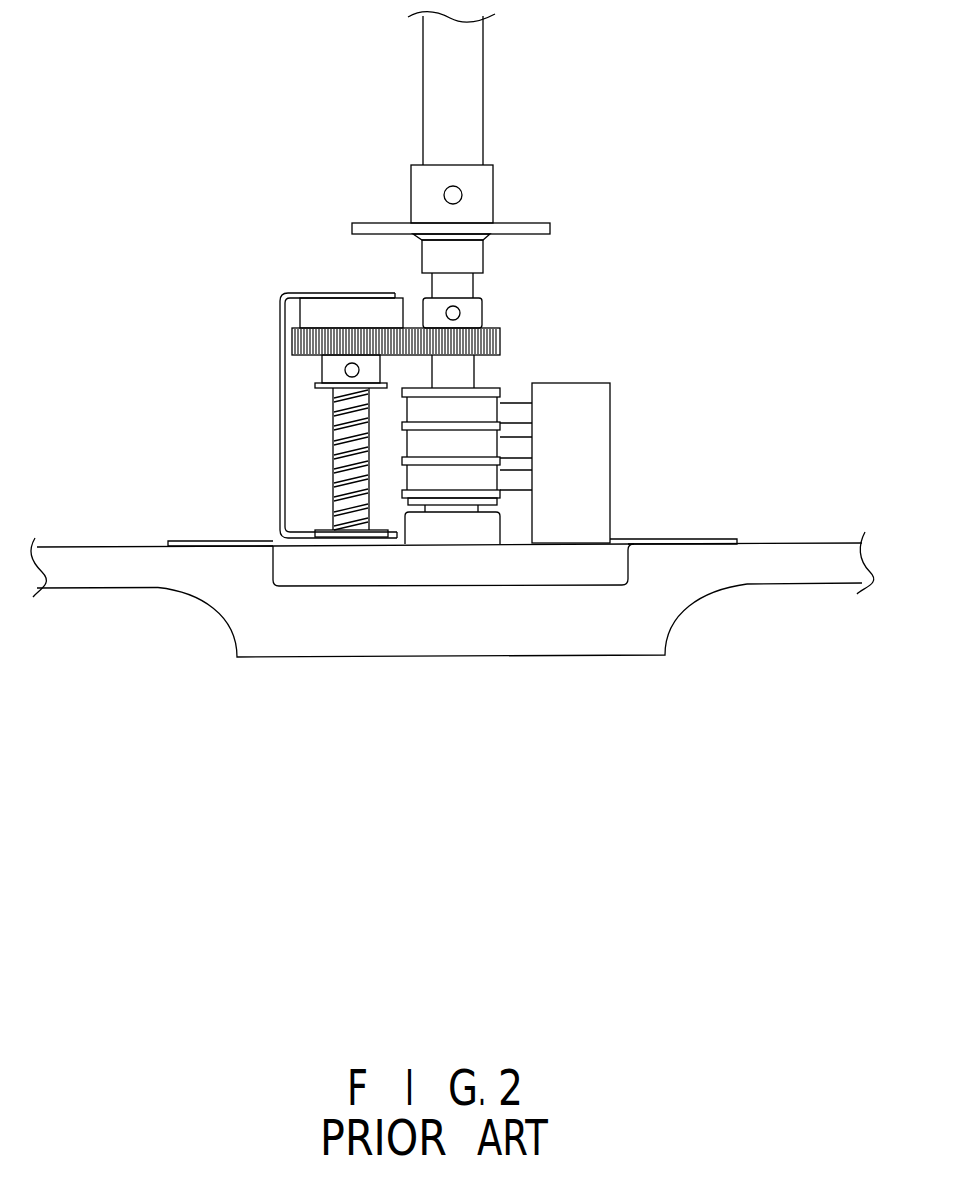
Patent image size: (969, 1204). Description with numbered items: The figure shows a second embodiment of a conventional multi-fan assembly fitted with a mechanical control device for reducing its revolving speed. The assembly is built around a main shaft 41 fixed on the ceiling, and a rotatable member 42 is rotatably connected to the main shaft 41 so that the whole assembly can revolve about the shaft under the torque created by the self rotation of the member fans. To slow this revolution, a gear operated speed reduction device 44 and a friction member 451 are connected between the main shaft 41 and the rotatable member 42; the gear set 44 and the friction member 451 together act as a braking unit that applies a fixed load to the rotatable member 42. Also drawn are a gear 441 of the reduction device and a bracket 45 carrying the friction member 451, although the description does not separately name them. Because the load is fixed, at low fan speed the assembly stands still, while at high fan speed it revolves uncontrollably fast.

The main shaft 41 is at (465, 118).
The rotatable member 42 is at (215, 613).
The gear operated speed reduction device 44 is at (322, 435).
The knurled gear 441 is at (302, 343).
The bracket 45 is at (278, 280).
The friction member 451 is at (337, 307).